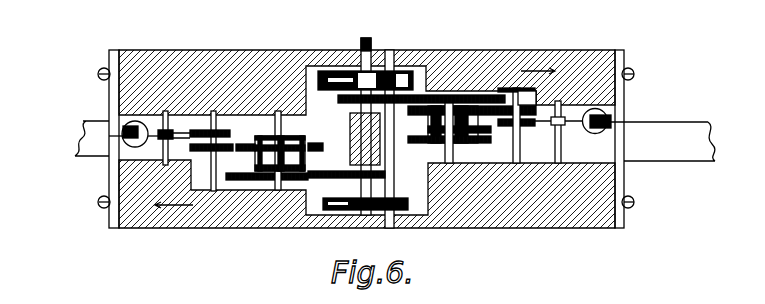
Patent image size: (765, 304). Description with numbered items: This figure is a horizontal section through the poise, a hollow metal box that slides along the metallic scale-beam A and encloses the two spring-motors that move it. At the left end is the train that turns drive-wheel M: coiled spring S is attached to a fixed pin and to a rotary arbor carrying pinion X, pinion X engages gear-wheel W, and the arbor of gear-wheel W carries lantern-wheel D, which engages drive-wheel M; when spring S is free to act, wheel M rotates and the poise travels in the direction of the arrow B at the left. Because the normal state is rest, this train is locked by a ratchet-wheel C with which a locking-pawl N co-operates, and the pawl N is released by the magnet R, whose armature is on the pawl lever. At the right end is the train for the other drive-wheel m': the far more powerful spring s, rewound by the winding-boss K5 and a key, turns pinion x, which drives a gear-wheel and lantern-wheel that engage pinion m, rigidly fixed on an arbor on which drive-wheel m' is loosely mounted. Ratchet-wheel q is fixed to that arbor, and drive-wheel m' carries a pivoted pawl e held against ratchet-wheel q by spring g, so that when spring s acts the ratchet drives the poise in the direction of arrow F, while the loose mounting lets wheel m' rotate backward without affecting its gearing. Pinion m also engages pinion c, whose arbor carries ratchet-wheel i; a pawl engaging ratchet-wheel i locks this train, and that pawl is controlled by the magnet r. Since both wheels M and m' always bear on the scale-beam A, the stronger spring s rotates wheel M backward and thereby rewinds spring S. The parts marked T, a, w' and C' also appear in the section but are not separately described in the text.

The scale-beam A is at (68, 128).
The direction of motion arrow B is at (161, 205).
The arrow F is at (546, 74).
The magnet R is at (129, 113).
The locking-pawl N is at (151, 135).
The shaft T is at (196, 136).
The ratchet-wheel C is at (222, 135).
The gear-wheel W is at (222, 160).
The lantern-wheel D is at (281, 116).
The drive-wheel M is at (306, 136).
The winding-boss K5 is at (377, 124).
The coiled spring S is at (306, 192).
The pinion x is at (330, 90).
The pinion X is at (344, 163).
The spring g is at (372, 139).
The pinion m is at (461, 112).
The drum a is at (420, 116).
The pawl e is at (483, 120).
The driving-wheel m' is at (446, 147).
The ratchet-wheel q is at (440, 133).
The gear w' is at (509, 84).
The pinion c is at (532, 105).
The ratchet-wheel i is at (521, 117).
The magnet r is at (553, 107).
The bearing C' is at (649, 135).